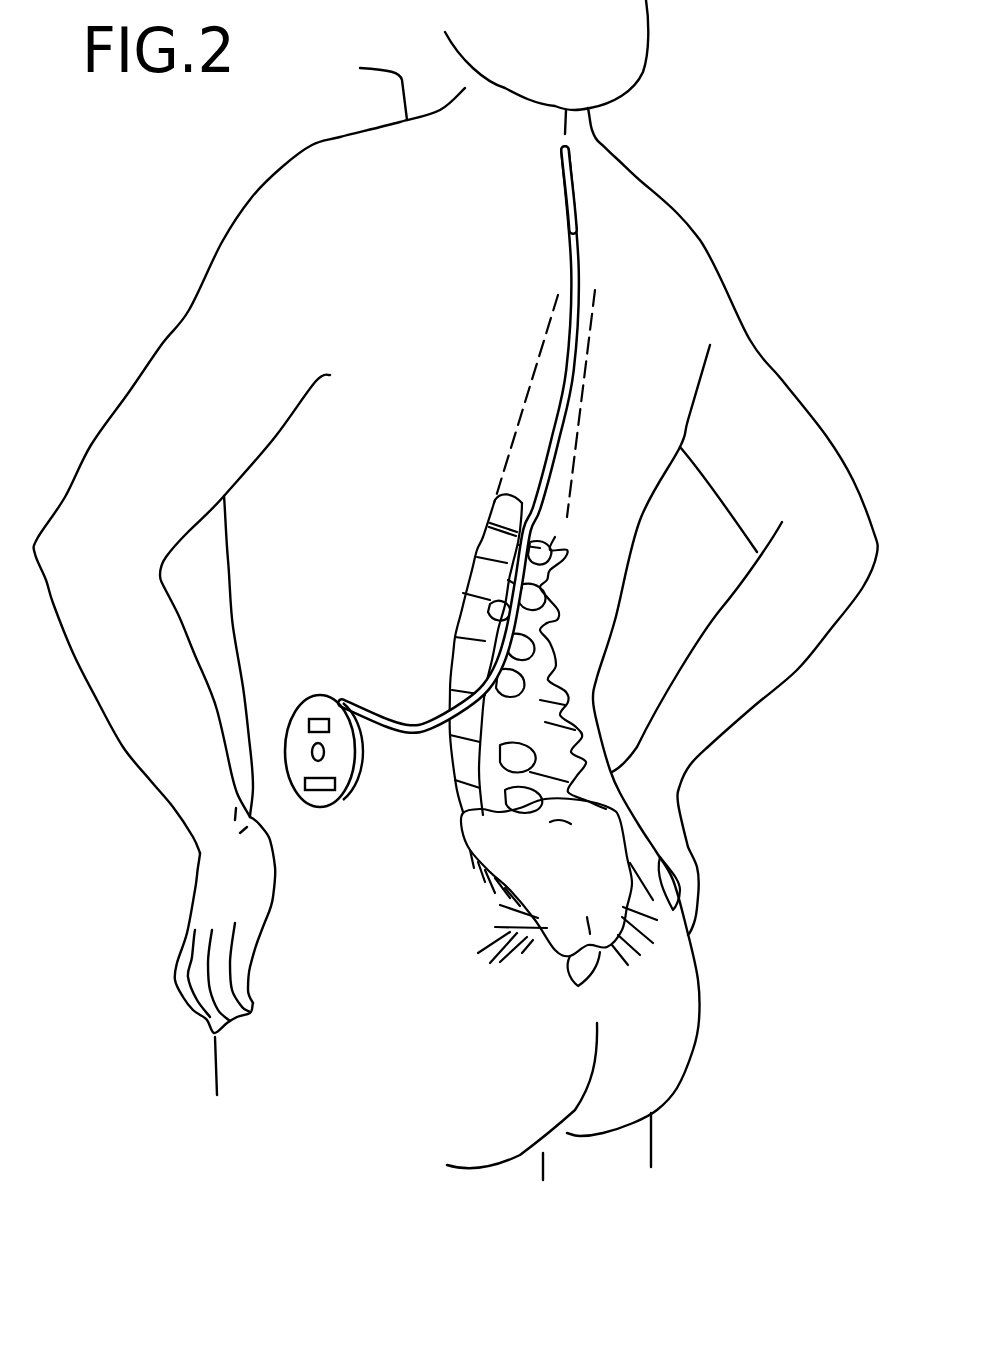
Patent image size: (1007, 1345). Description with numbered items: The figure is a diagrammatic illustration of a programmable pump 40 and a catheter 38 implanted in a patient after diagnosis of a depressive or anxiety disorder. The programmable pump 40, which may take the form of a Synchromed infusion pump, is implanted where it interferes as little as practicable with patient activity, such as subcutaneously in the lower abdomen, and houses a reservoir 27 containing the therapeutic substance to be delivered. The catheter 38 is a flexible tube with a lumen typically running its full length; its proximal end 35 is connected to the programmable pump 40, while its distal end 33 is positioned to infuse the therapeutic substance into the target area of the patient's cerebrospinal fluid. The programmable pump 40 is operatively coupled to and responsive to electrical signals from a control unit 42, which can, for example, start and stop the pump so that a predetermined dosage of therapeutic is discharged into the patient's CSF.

The reservoir 27 is at (320, 712).
The distal end 33 is at (571, 158).
The proximal end 35 is at (342, 702).
The catheter 38 is at (580, 268).
The programmable pump 40 is at (343, 760).
The control unit 42 is at (320, 792).